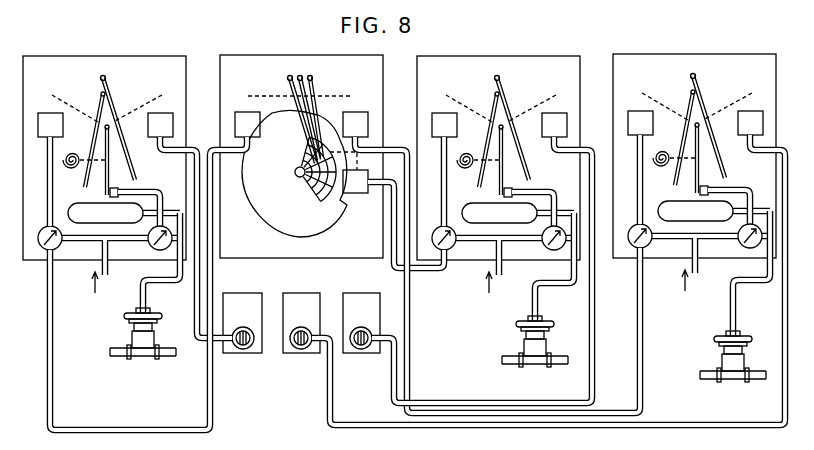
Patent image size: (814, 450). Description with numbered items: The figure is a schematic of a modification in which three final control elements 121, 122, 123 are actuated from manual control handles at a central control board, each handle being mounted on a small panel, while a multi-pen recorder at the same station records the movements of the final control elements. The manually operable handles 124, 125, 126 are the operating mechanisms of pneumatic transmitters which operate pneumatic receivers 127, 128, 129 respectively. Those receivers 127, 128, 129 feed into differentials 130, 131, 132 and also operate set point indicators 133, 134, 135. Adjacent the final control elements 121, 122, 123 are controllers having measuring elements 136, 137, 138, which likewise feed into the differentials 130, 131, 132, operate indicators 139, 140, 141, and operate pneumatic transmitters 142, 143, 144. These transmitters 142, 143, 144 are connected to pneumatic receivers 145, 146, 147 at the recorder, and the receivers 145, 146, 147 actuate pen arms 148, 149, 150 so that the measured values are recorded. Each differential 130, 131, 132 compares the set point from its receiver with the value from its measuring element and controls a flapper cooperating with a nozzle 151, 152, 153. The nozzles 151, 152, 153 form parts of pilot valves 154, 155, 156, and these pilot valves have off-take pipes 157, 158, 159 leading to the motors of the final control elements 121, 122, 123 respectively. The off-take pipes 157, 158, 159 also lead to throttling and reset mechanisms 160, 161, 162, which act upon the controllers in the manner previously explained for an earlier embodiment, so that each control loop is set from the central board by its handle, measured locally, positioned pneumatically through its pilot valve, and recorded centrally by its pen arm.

The final control element 121 is at (140, 338).
The final control element 122 is at (723, 356).
The final control element 123 is at (526, 341).
The manually operable handle 124 is at (245, 352).
The manually operable handle 125 is at (302, 350).
The manually operable handle 126 is at (362, 350).
The pneumatic receiver 127 is at (164, 113).
The pneumatic receiver 128 is at (755, 106).
The pneumatic receiver 129 is at (559, 108).
The differential 130 is at (108, 172).
The differential 131 is at (724, 158).
The differential 132 is at (528, 160).
The set point indicator 133 is at (113, 98).
The set point indicator 134 is at (713, 126).
The set point indicator 135 is at (517, 128).
The measuring element 136 is at (66, 171).
The measuring element 137 is at (656, 169).
The measuring element 138 is at (460, 171).
The indicator 139 is at (95, 134).
The indicator 140 is at (675, 138).
The indicator 141 is at (479, 140).
The pneumatic transmitter 142 is at (50, 113).
The pneumatic transmitter 143 is at (634, 151).
The pneumatic transmitter 144 is at (438, 153).
The pneumatic receiver 145 is at (243, 112).
The pneumatic receiver 146 is at (352, 186).
The pneumatic receiver 147 is at (360, 112).
The pen arm 148 is at (289, 76).
The pen arm 149 is at (312, 79).
The pen arm 150 is at (301, 74).
The nozzle 151 is at (121, 190).
The nozzle 152 is at (728, 198).
The nozzle 153 is at (532, 200).
The pilot valve 154 is at (149, 243).
The pilot valve 155 is at (734, 239).
The pilot valve 156 is at (538, 241).
The off-take pipe 157 is at (147, 299).
The off-take pipe 158 is at (754, 273).
The off-take pipe 159 is at (556, 266).
The throttling and reset mechanism 160 is at (88, 208).
The throttling and reset mechanism 161 is at (689, 204).
The throttling and reset mechanism 162 is at (493, 206).